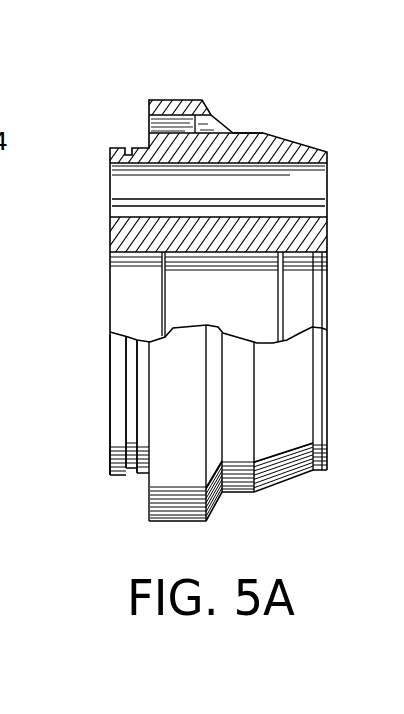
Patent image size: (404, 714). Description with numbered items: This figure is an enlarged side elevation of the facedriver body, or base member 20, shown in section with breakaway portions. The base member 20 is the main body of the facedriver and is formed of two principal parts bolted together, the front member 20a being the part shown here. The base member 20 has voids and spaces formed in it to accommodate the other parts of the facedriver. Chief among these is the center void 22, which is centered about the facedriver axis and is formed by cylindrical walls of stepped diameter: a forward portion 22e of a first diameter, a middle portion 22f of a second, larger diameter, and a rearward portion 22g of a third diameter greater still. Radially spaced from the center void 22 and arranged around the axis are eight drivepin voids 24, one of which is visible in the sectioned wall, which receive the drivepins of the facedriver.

The base member 20 is at (167, 495).
The front member 20a is at (240, 143).
The center void 22 is at (133, 333).
The forward portion of center void 22e is at (298, 282).
The middle portion of center void 22f is at (218, 268).
The rearward portion of center void 22g is at (127, 277).
The drivepin void 24 is at (162, 178).